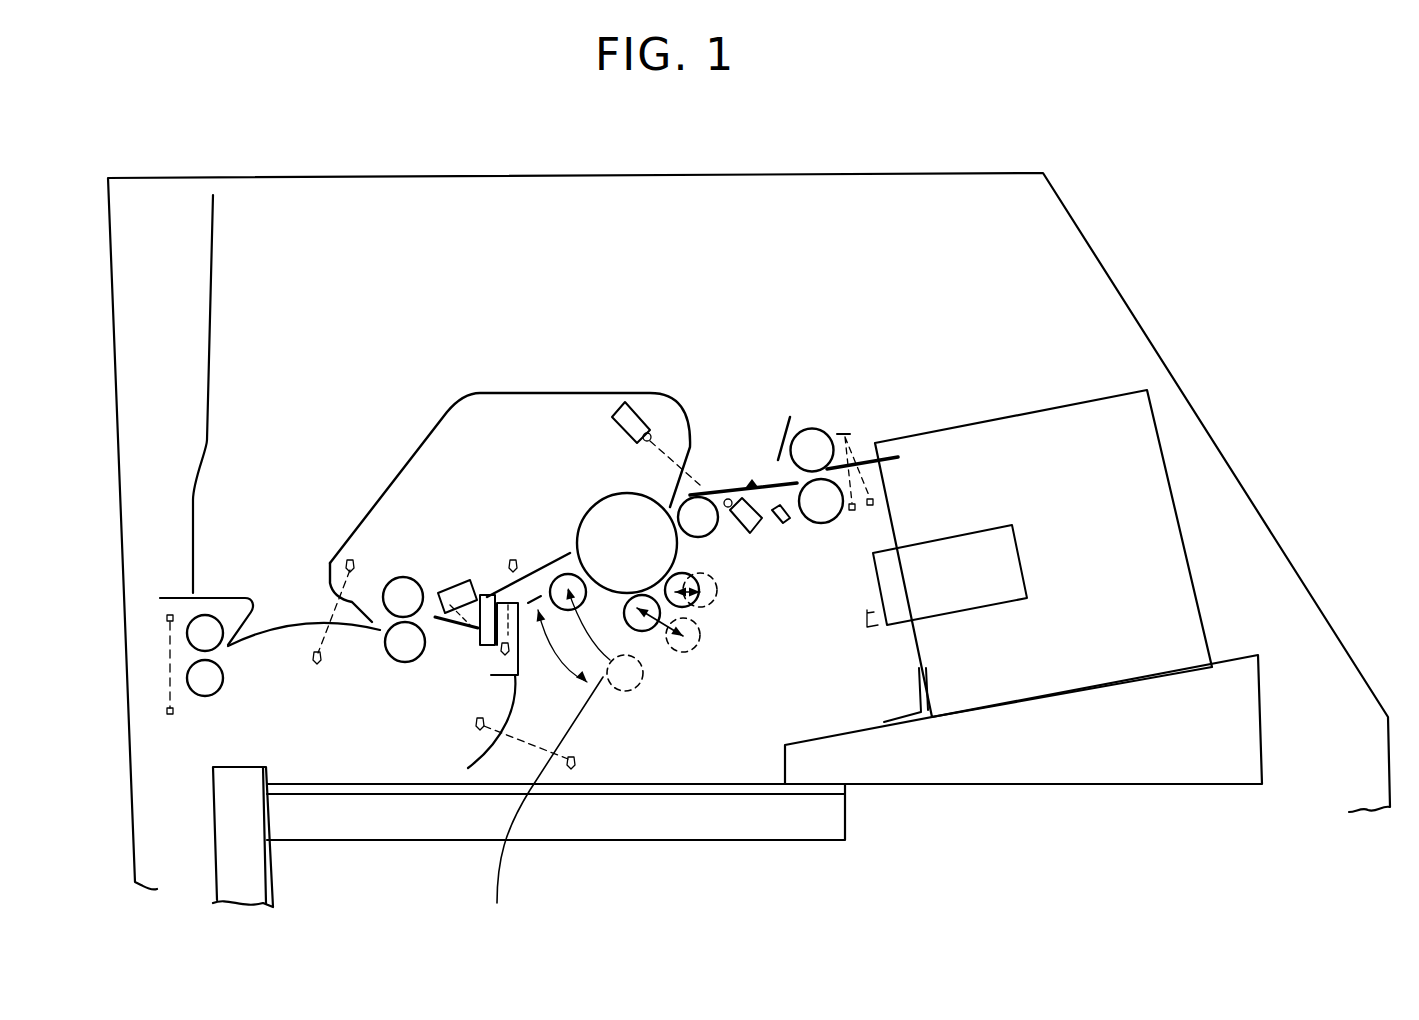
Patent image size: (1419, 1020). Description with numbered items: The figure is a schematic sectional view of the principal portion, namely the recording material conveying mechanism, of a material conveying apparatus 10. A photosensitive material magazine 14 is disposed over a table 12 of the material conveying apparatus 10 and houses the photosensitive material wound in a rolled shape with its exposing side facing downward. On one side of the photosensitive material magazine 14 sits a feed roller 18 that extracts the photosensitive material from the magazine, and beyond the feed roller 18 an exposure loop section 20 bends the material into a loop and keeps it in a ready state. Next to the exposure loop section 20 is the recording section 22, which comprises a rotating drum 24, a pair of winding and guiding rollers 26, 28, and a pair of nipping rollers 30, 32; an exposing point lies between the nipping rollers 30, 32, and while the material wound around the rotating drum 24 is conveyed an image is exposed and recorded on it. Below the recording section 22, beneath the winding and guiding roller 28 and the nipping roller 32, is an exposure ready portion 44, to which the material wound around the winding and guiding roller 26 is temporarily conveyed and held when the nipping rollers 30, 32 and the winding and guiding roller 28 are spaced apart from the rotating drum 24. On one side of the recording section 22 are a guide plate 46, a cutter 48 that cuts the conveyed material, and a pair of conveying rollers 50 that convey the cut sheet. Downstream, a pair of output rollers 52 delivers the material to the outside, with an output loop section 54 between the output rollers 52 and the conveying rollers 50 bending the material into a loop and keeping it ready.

The material conveying apparatus 10 is at (1131, 293).
The table 12 is at (755, 842).
The photosensitive material magazine 14 is at (1175, 499).
The feed roller 18 is at (820, 425).
The exposure loop section 20 is at (749, 443).
The recording section 22 is at (580, 493).
The rotating drum 24 is at (583, 513).
The winding and guiding roller 26 is at (713, 532).
The winding and guiding roller 28 is at (557, 580).
The nipping roller 30 is at (715, 590).
The nipping roller 32 is at (643, 632).
The exposure ready portion 44 is at (540, 733).
The guide plate 46 is at (494, 573).
The cutter 48 is at (460, 580).
The pair of conveying rollers 50 is at (398, 577).
The pair of output rollers 52 is at (210, 617).
The output loop section 54 is at (285, 602).